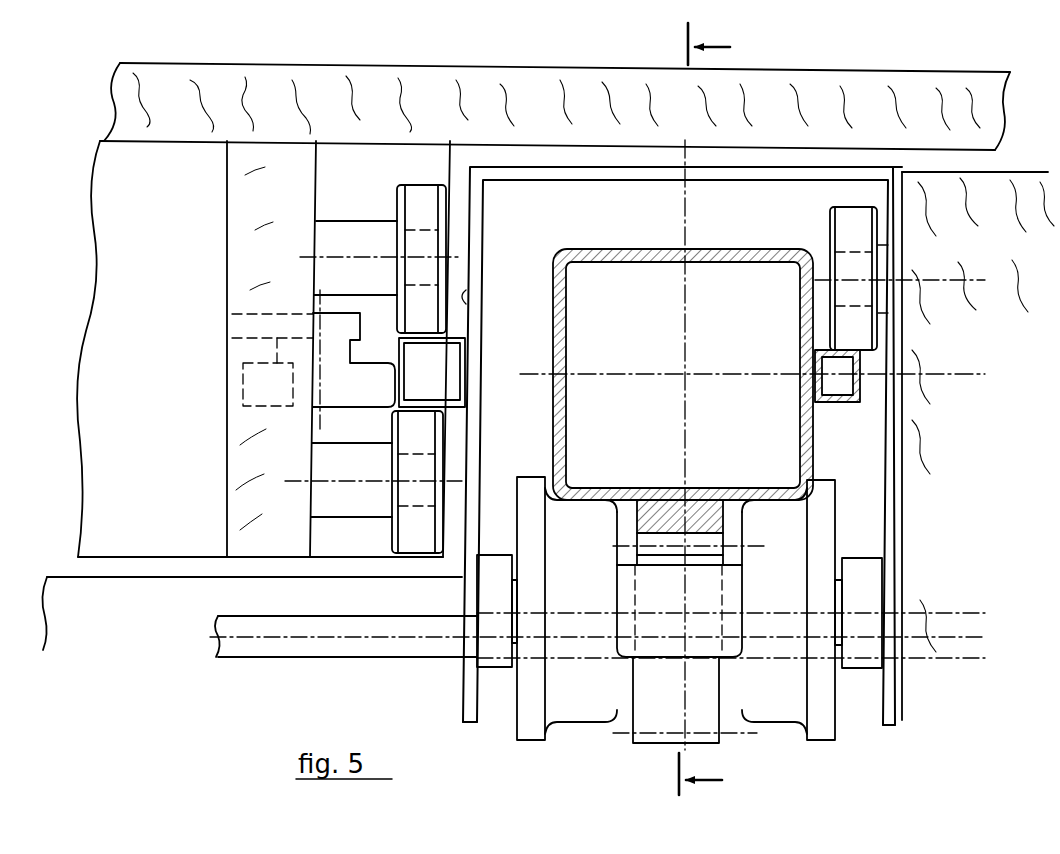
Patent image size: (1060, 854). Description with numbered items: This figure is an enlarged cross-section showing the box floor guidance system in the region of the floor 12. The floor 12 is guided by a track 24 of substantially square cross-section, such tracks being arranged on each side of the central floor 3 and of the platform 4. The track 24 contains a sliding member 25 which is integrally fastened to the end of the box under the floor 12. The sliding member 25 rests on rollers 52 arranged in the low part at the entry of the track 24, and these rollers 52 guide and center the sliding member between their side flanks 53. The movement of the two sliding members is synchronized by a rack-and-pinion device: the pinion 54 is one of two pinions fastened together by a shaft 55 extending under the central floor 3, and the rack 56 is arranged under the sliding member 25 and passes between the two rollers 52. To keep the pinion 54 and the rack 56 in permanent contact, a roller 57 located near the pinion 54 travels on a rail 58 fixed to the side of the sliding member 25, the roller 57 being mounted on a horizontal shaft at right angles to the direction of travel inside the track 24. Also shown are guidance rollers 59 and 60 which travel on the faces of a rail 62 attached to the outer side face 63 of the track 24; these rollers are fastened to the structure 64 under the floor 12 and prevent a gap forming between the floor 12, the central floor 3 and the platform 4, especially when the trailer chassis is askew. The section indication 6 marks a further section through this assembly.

The central floor 3 is at (60, 574).
The platform 4 is at (1022, 170).
The section line 6- 6 is at (704, 417).
The floor 12 is at (432, 62).
The track 24 is at (536, 180).
The sliding member 25 is at (568, 305).
The rollers 52 is at (586, 723).
The side flanks 53 is at (535, 742).
The pinion 54 is at (653, 742).
The shaft 55 is at (310, 657).
The rack 56 is at (652, 502).
The roller 57 is at (868, 331).
The rail 58 is at (858, 386).
The roller 59 is at (396, 187).
The roller 60 is at (352, 408).
The rail 62 is at (438, 397).
The outer side face 63 is at (464, 286).
The structure 64 is at (228, 473).